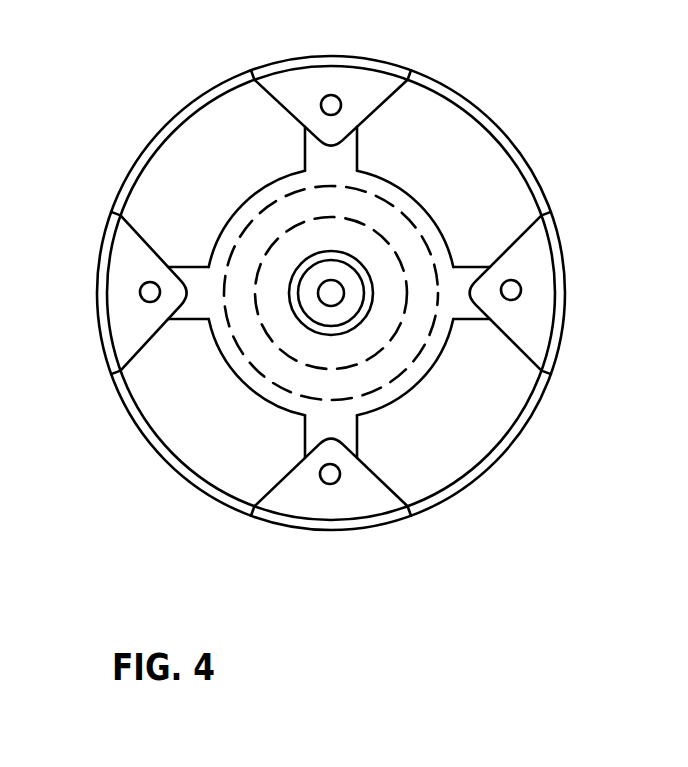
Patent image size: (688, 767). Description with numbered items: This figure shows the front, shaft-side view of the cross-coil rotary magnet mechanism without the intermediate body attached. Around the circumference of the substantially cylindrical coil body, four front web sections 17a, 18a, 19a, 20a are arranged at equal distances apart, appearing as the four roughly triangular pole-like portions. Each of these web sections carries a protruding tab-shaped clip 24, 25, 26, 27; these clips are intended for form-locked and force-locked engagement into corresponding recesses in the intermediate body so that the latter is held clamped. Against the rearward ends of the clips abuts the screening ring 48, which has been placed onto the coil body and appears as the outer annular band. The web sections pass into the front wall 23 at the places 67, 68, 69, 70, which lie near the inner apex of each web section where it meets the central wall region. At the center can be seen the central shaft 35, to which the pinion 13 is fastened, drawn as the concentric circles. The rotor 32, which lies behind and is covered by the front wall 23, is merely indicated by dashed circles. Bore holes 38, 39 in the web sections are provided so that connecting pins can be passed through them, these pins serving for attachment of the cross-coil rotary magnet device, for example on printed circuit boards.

The pinion 13 is at (338, 316).
The front web section 17a is at (127, 254).
The front web section 18a is at (372, 496).
The front web section 19a is at (376, 92).
The front web section 20a is at (525, 252).
The front wall 23 is at (413, 233).
The tab-shaped clip 24 is at (105, 301).
The tab-shaped clip 25 is at (345, 63).
The tab-shaped clip 26 is at (563, 320).
The tab-shaped clip 27 is at (304, 524).
The rotor 32 is at (296, 340).
The central shaft 35 is at (340, 302).
The bore hole 38 is at (142, 298).
The bore hole 39 is at (333, 484).
The screening ring 48 is at (160, 133).
The transition place 67 is at (348, 155).
The transition place 68 is at (470, 318).
The transition place 69 is at (316, 427).
The transition place 70 is at (186, 302).